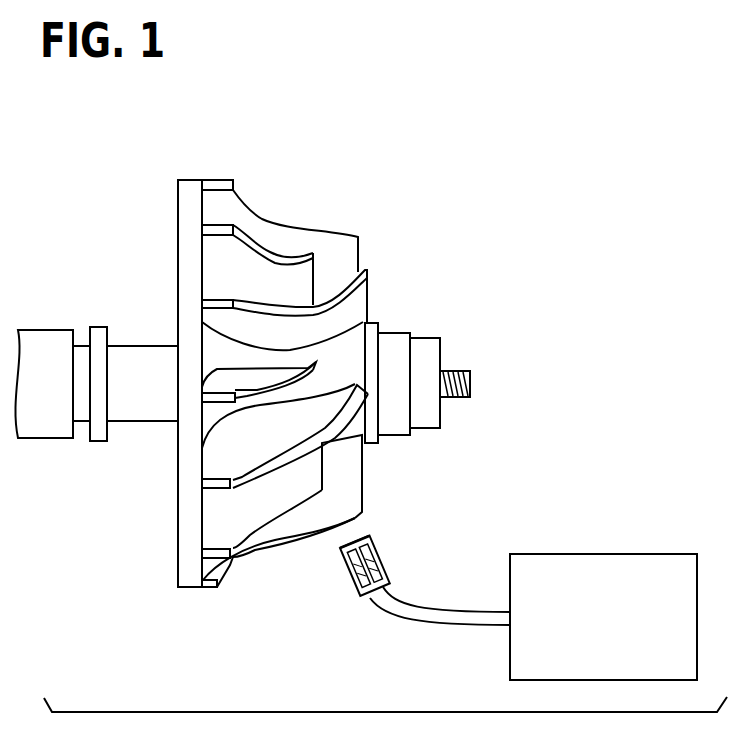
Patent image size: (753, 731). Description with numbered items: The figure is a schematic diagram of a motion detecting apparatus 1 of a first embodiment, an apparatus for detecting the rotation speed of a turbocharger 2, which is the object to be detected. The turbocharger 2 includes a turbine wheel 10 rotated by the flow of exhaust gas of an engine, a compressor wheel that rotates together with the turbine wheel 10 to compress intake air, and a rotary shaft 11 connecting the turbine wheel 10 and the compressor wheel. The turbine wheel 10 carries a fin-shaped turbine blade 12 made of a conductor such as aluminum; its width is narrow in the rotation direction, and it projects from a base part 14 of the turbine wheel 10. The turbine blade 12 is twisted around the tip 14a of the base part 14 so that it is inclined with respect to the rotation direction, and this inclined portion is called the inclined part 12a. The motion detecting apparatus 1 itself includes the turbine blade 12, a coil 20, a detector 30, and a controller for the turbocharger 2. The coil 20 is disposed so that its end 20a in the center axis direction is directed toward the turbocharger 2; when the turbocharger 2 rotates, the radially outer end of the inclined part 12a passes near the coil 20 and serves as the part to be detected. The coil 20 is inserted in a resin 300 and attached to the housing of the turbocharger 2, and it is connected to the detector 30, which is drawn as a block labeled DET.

The motion detecting apparatus 1 is at (507, 482).
The turbocharger 2 is at (371, 151).
The turbine wheel 10 is at (188, 180).
The rotary shaft 11 is at (42, 327).
The turbine blade 12 is at (258, 216).
The inclined part 12a is at (338, 236).
The base part 14 is at (423, 384).
The tip of the base part 14a is at (378, 425).
The coil 20 is at (395, 598).
The end of the coil 20a is at (365, 528).
The detector 30 is at (622, 554).
The resin 300 is at (376, 597).